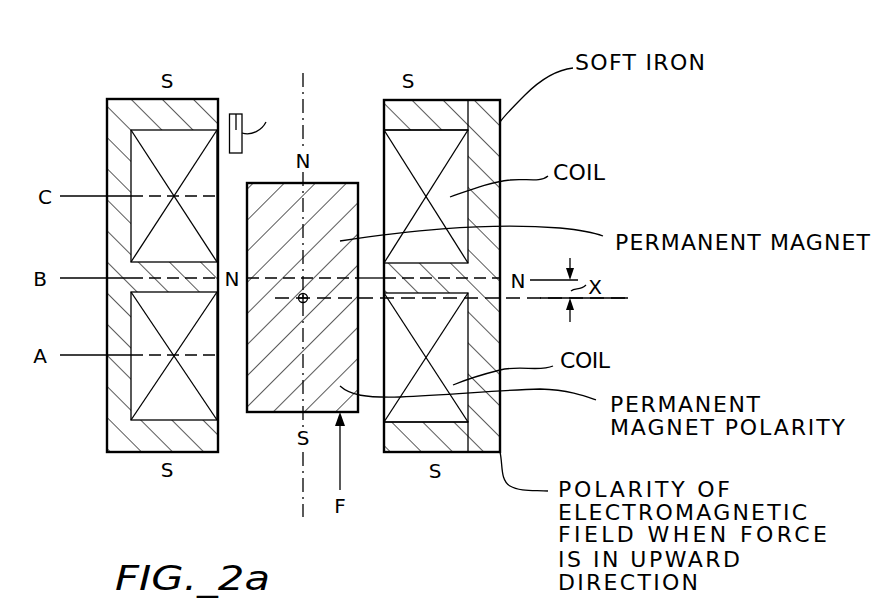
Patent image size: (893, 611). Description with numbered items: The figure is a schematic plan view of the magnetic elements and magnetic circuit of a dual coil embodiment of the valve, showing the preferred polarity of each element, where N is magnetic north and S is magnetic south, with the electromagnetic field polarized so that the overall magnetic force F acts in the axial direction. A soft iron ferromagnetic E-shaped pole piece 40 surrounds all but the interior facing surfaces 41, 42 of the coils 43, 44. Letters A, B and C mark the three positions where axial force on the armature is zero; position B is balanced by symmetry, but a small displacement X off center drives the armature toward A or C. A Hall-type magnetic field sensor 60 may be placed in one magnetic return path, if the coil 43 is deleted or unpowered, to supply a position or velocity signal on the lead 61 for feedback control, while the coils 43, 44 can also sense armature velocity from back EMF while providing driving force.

The E-shaped pole piece 40 is at (470, 100).
The interior facing surface 41 is at (384, 143).
The interior facing surface 42 is at (383, 382).
The coil 43 is at (384, 157).
The coil 44 is at (453, 352).
The magnetic field sensor 60 is at (236, 114).
The lead 61 is at (250, 131).